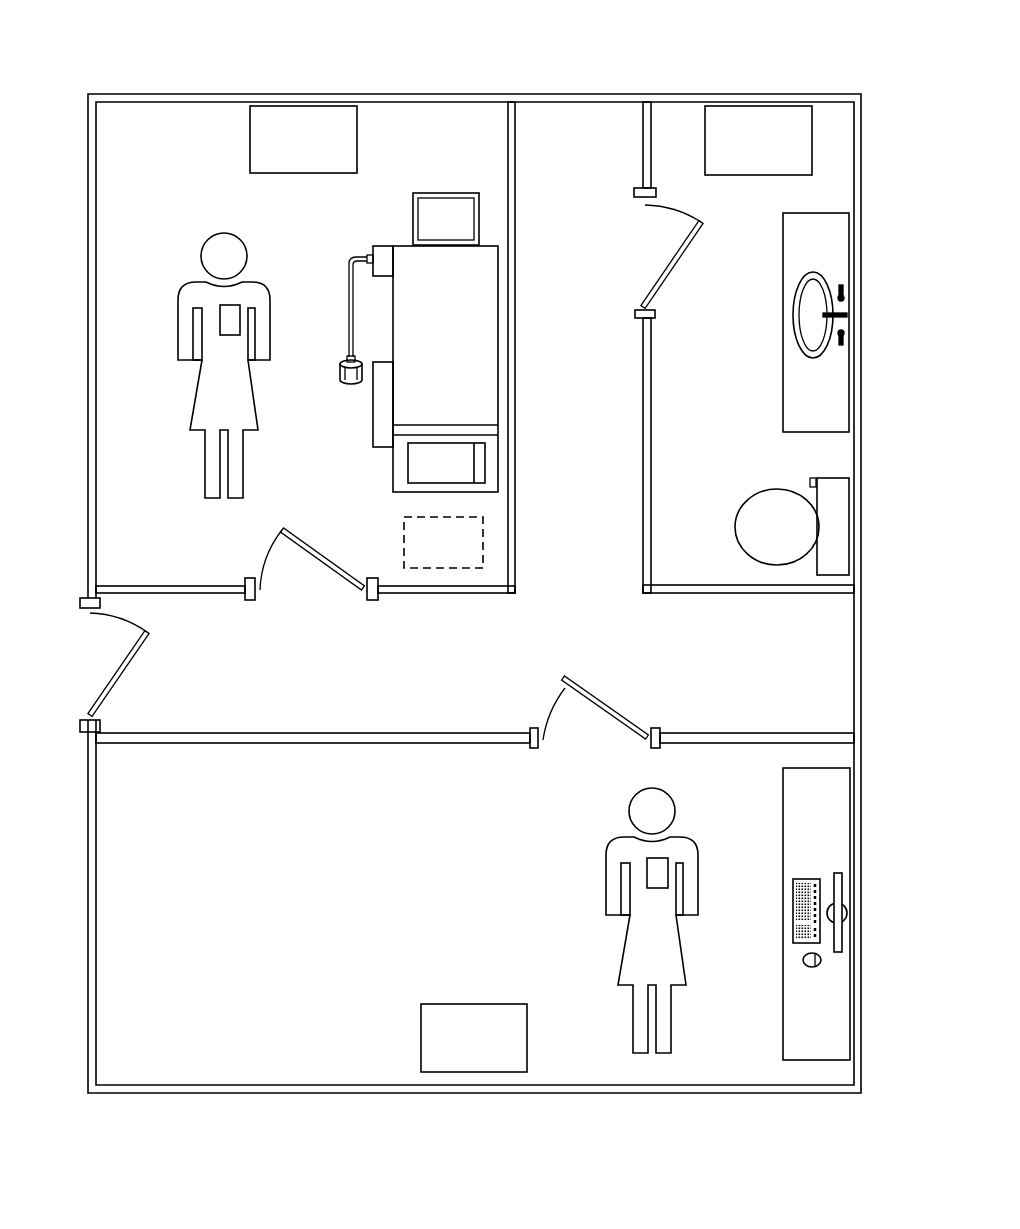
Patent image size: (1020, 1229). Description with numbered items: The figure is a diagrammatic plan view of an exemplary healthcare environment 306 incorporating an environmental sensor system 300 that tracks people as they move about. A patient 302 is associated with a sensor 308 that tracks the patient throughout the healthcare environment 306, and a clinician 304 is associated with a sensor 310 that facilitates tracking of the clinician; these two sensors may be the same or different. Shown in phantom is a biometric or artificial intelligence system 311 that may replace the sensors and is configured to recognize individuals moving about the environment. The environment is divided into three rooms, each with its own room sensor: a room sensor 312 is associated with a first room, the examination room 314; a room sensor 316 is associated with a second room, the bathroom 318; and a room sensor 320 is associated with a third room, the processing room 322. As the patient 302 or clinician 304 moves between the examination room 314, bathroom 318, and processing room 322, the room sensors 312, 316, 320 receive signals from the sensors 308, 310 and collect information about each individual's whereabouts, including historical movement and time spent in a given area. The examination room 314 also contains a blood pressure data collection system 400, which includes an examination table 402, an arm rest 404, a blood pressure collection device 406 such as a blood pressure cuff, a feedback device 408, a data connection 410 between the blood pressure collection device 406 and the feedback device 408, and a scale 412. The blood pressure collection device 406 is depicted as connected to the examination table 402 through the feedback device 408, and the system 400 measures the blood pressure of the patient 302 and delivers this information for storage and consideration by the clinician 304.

The environmental sensor system 300 is at (104, 57).
The patient 302 is at (183, 345).
The clinician 304 is at (607, 890).
The healthcare environment 306 is at (113, 138).
The sensor 308 is at (232, 320).
The sensor 310 is at (660, 871).
The biometric or artificial intelligence system 311 is at (452, 558).
The room sensor 312 is at (250, 127).
The examination room 314 is at (182, 548).
The room sensor 316 is at (812, 129).
The bathroom 318 is at (717, 395).
The room sensor 320 is at (421, 1040).
The processing room 322 is at (447, 882).
The blood pressure data collection system 400 is at (445, 178).
The examination table 402 is at (452, 344).
The arm rest 404 is at (380, 420).
The blood pressure collection device 406 is at (340, 368).
The feedback device 408 is at (383, 246).
The data connection 410 is at (349, 263).
The scale 412 is at (460, 223).